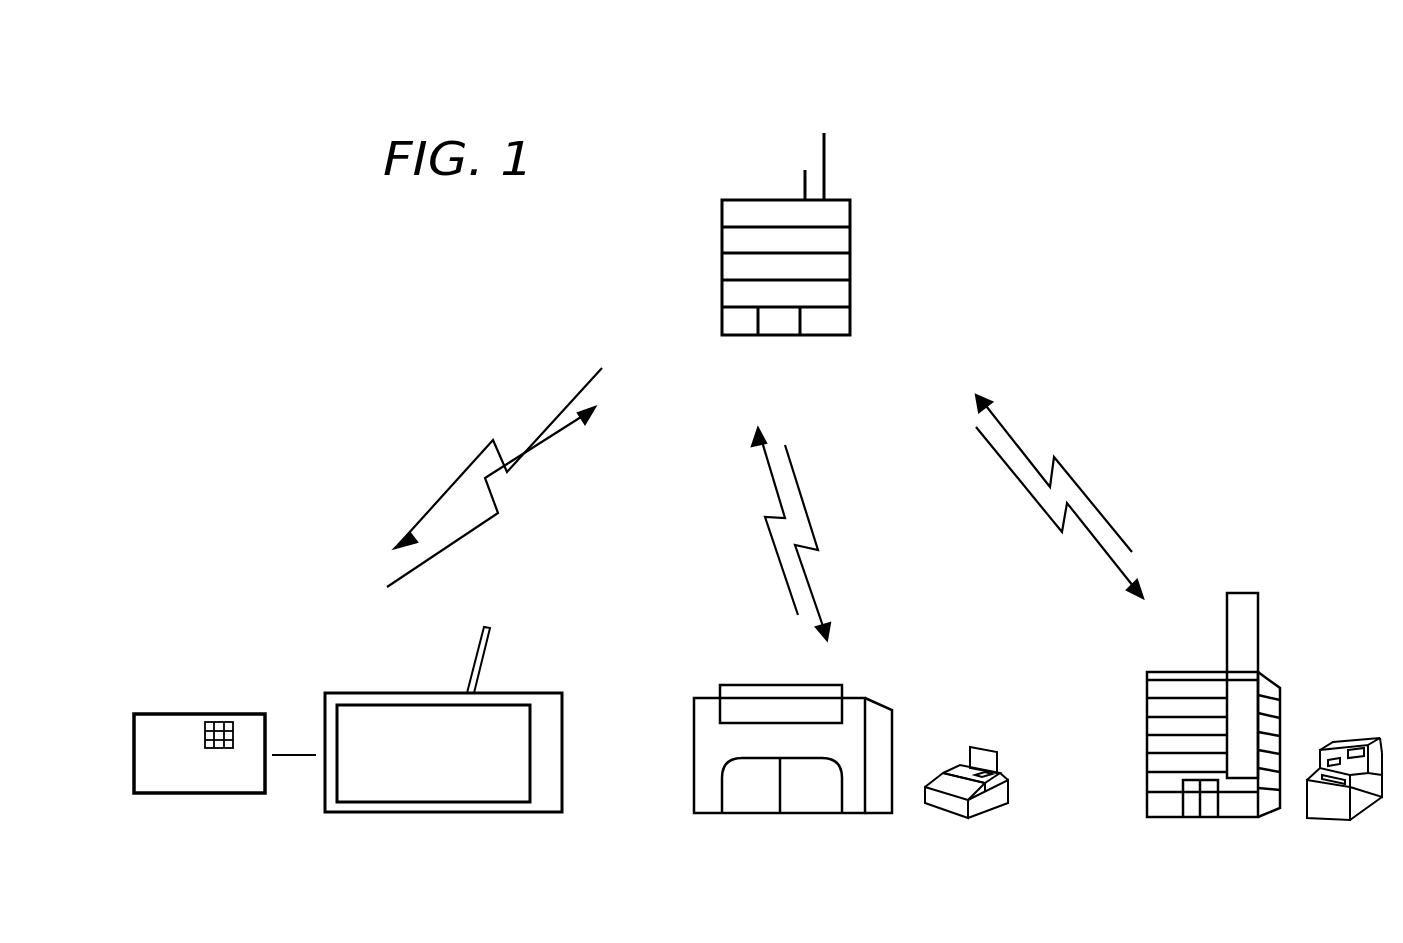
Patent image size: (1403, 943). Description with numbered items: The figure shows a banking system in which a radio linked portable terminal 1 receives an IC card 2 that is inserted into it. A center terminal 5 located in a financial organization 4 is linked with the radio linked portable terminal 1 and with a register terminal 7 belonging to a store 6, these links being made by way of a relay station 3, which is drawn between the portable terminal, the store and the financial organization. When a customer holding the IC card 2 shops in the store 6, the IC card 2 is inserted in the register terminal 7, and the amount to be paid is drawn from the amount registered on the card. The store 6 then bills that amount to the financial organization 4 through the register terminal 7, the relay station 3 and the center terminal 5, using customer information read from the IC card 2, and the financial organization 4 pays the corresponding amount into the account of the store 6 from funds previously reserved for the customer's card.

The radio linked portable terminal 1 is at (355, 698).
The IC card 2 is at (165, 718).
The relay station 3 is at (850, 218).
The financial organization 4 is at (1172, 672).
The center terminal 5 is at (1357, 747).
The store 6 is at (865, 698).
The register terminal 7 is at (993, 740).